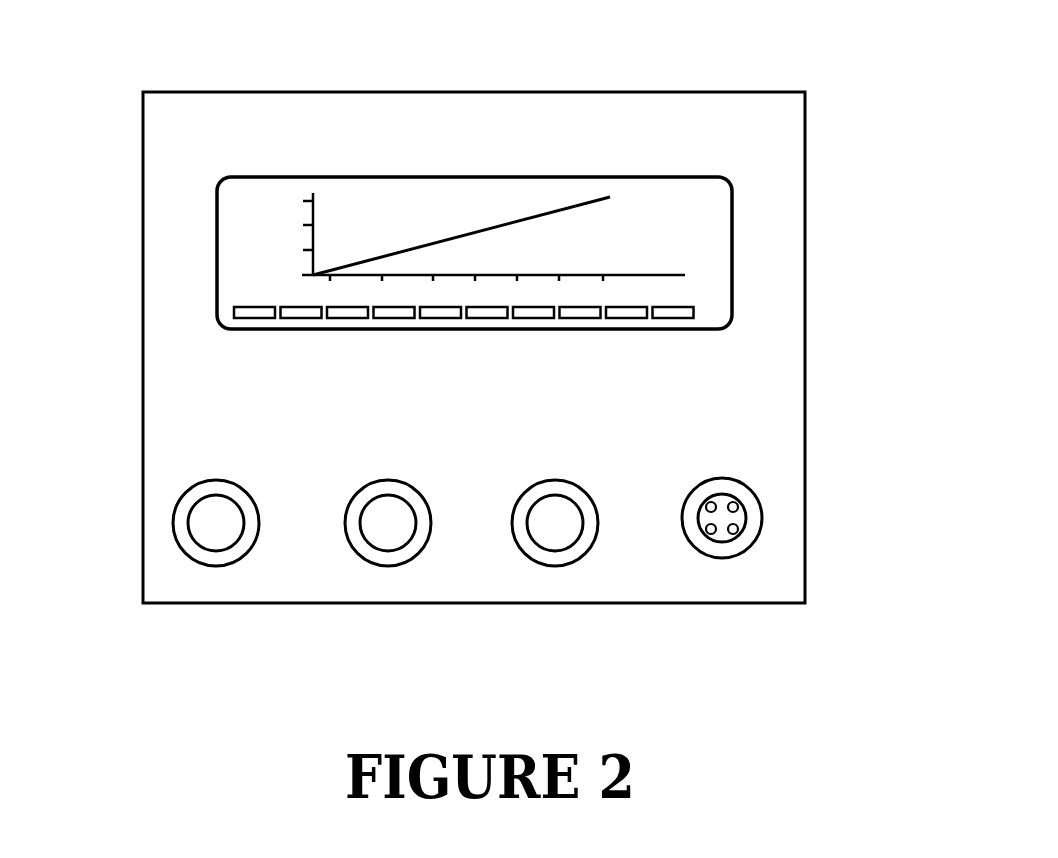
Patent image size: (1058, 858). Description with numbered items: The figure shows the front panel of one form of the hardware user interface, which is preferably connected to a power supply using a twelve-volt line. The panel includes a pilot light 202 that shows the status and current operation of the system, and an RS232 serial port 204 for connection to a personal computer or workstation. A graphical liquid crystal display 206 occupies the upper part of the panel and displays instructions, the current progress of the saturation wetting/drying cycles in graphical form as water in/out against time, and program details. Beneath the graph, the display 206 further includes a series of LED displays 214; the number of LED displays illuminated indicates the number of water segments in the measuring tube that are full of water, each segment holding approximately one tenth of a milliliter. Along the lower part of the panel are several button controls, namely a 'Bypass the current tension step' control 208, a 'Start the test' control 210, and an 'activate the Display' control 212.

The pilot light 202 is at (805, 125).
The RS232 serial port 204 is at (723, 543).
The graphical liquid crystal display 206 is at (247, 208).
The 'Bypass the current tension step' button control 208 is at (387, 558).
The 'Start the test' button control 210 is at (550, 567).
The 'activate the Display' button control 212 is at (220, 557).
The LED displays 214 is at (245, 310).